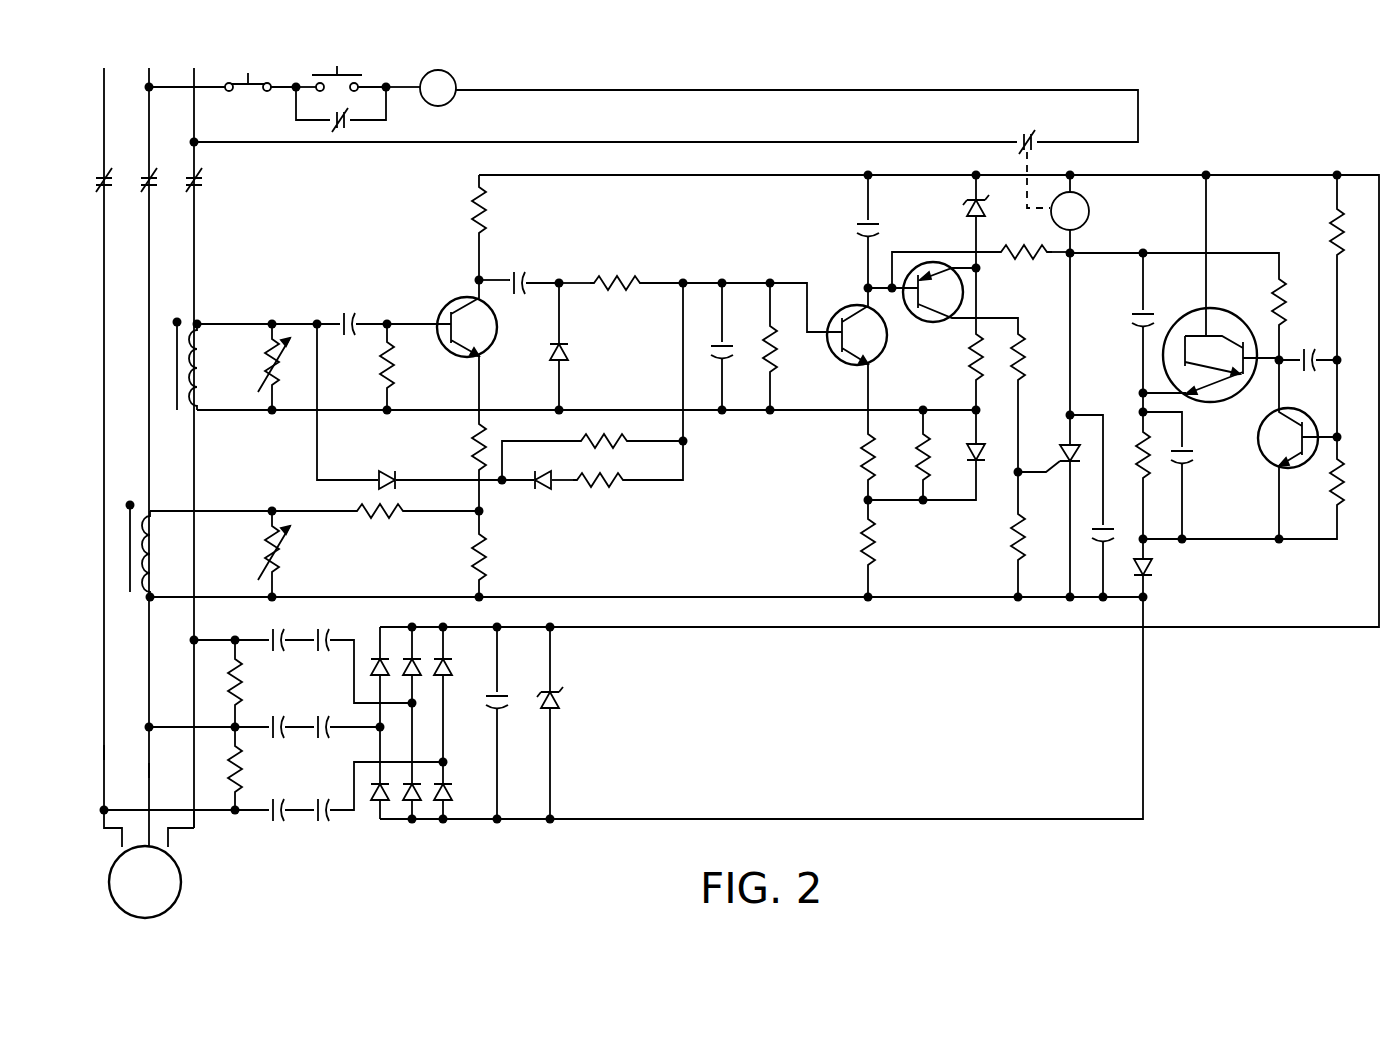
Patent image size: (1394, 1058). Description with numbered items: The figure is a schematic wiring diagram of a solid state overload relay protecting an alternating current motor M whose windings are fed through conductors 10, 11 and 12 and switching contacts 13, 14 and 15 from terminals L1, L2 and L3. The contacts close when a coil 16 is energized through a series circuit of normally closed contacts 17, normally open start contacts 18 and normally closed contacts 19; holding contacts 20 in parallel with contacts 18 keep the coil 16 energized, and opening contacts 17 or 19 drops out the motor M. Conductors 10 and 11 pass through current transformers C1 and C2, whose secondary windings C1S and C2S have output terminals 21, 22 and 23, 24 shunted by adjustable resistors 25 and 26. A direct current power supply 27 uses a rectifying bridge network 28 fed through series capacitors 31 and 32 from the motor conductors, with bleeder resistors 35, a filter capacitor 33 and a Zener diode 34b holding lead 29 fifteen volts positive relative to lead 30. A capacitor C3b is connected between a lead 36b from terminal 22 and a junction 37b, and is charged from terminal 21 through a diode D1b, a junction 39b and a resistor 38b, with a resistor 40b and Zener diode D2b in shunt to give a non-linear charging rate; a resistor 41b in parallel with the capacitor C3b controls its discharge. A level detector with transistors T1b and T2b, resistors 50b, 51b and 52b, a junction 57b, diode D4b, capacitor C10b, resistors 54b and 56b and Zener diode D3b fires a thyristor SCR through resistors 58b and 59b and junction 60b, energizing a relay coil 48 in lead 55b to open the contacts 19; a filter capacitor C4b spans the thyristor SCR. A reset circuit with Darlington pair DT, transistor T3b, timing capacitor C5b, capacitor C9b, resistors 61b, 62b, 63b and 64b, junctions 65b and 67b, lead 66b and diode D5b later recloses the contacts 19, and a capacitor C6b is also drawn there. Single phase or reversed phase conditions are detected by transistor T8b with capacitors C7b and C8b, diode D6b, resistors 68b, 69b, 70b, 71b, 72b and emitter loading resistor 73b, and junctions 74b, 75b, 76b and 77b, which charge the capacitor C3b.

The conductor 10 is at (194, 818).
The conductor 11 is at (149, 763).
The conductor 12 is at (104, 745).
The switching contact 13 is at (198, 193).
The switching contact 14 is at (153, 193).
The switching contact 15 is at (108, 193).
The coil 16 is at (423, 88).
The normally closed switch contacts 17 is at (246, 88).
The normally open switch contacts 18 is at (347, 73).
The normally closed contacts 19 is at (1036, 138).
The normally open contacts 20 is at (349, 118).
The output terminal 21 is at (274, 324).
The output terminal 22 is at (271, 416).
The output terminal 23 is at (273, 508).
The output terminal 24 is at (276, 600).
The adjustable resistor 25 is at (278, 378).
The adjustable resistor 26 is at (278, 566).
The direct current power supply 27 is at (588, 744).
The three phase full wave rectifying bridge network 28 is at (441, 744).
The lead 29 is at (600, 175).
The lead 30 is at (685, 597).
The capacitor 31 is at (268, 652).
The capacitor 32 is at (313, 652).
The capacitor 33 is at (490, 695).
The Zener diode 34b is at (566, 693).
The resistor 35 is at (232, 686).
The lead 36b is at (603, 410).
The junction 37b is at (728, 271).
The resistor 38b is at (614, 447).
The junction 39b is at (500, 484).
The resistor 40b is at (616, 485).
The resistor 41b is at (779, 355).
The coil 48 is at (1070, 214).
The resistor 50b is at (866, 454).
The resistor 51b is at (938, 471).
The resistor 52b is at (878, 540).
The resistor 54b is at (1010, 258).
The lead 55b is at (1100, 253).
The resistor 56b is at (972, 372).
The junction 57b is at (864, 500).
The resistor 58b is at (1034, 375).
The resistor 59b is at (1014, 548).
The junction 60b is at (1020, 474).
The resistor 61b is at (1134, 444).
The resistor 62b is at (1280, 292).
The resistor 63b is at (1324, 240).
The resistor 64b is at (1332, 506).
The junction 65b is at (1138, 395).
The lead 66b is at (1258, 540).
The junction 67b is at (1340, 362).
The resistor 68b is at (395, 372).
The resistor 69b is at (486, 218).
The resistor 70b is at (486, 568).
The resistor 71b is at (372, 518).
The resistor 72b is at (618, 280).
The emitter loading resistor 73b is at (472, 436).
The junction 74b is at (396, 314).
The junction 75b is at (478, 279).
The junction 76b is at (483, 515).
The junction 77b is at (559, 265).
The terminal L1 is at (193, 436).
The terminal L2 is at (147, 445).
The terminal L3 is at (101, 427).
The current transformer C1 is at (166, 332).
The secondary winding C1S is at (203, 344).
The current transformer C2 is at (126, 515).
The secondary winding C2S is at (161, 531).
The capacitor C3b is at (727, 342).
The filter capacitor C4b is at (1099, 532).
The timing capacitor C5b is at (1136, 314).
The capacitor C6b is at (1190, 458).
The capacitor C7b is at (345, 321).
The capacitor C8b is at (512, 268).
The capacitor C9b is at (1296, 358).
The noise suppression capacitor C10b is at (854, 232).
The diode D1b is at (391, 478).
The Zener diode D2b is at (536, 487).
The Zener diode D3b is at (965, 207).
The diode D4b is at (992, 441).
The diode D5b is at (1151, 572).
The diode D6b is at (567, 350).
The transistor T1b is at (842, 306).
The transistor T2b is at (956, 330).
The transistor T3b is at (1260, 436).
The transistor T8b is at (497, 340).
The Darlington amplifier pair DT is at (1217, 318).
The thyristor SCR is at (1064, 444).
The alternating current motor M is at (149, 864).